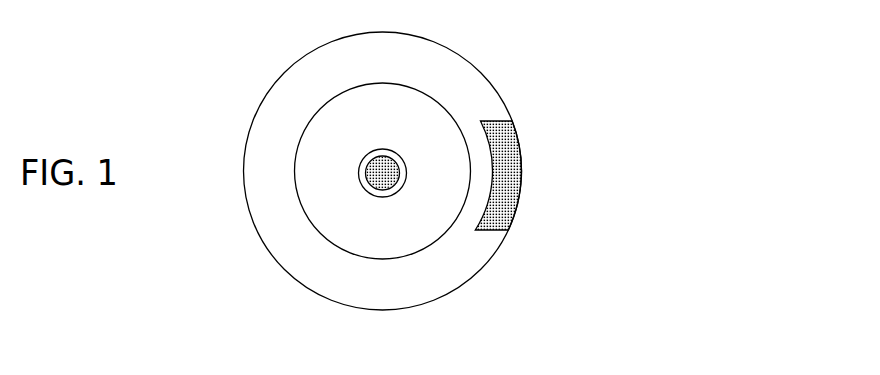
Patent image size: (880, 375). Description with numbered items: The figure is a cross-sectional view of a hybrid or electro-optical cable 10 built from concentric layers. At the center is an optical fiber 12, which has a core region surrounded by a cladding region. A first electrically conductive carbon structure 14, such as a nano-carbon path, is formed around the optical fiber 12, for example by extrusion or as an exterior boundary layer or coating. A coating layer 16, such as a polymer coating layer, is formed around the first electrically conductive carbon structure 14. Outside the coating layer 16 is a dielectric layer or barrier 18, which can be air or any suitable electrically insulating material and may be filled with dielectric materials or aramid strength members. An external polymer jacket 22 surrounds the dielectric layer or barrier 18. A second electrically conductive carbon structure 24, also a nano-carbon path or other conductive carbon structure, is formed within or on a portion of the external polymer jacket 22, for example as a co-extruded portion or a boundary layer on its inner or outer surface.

The hybrid or electro-optical cable 10 is at (744, 57).
The optical fiber 12 is at (383, 173).
The first electrically conductive carbon structure 14 is at (378, 157).
The coating layer 16 is at (393, 187).
The dielectric layer or barrier 18 is at (349, 233).
The external polymer jacket 22 is at (380, 295).
The second electrically conductive carbon structure 24 is at (513, 168).